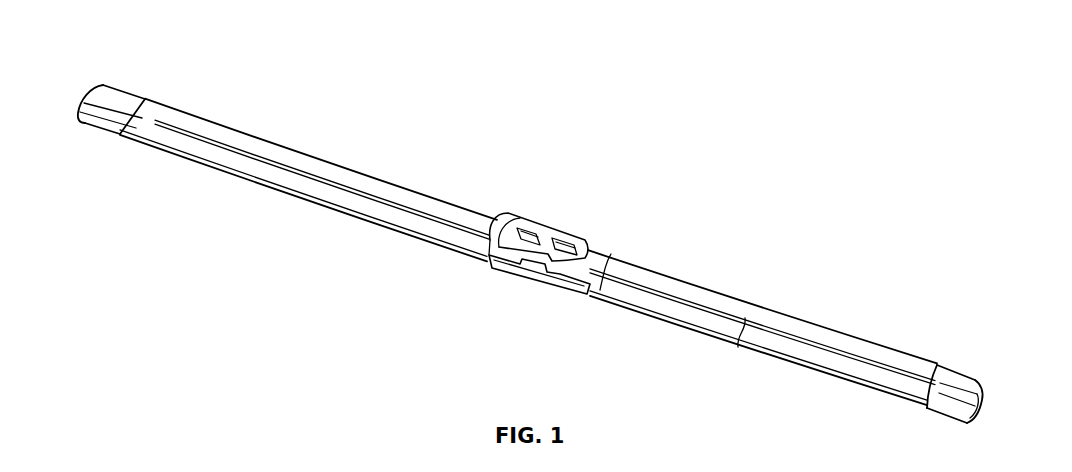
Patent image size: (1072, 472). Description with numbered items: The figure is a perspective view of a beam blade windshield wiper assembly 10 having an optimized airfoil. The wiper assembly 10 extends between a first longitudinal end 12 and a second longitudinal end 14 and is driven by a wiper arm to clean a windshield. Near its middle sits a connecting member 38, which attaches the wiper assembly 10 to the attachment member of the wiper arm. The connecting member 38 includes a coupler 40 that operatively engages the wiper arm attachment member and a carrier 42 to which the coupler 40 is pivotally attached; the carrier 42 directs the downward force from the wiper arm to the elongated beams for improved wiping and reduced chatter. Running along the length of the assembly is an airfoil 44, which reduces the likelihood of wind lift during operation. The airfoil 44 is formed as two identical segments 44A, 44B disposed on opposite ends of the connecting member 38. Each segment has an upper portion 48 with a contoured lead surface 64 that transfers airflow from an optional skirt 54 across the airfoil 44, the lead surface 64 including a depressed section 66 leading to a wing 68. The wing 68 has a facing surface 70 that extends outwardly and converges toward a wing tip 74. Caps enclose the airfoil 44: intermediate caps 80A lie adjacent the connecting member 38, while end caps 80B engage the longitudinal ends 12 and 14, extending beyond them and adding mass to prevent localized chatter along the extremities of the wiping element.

The beam blade windshield wiper assembly 10 is at (409, 106).
The first longitudinal end 12 is at (117, 68).
The second longitudinal end 14 is at (969, 360).
The connecting member 38 is at (517, 195).
The coupler 40 is at (551, 222).
The carrier 42 is at (529, 268).
The airfoil 44 is at (338, 148).
The first airfoil segment 44A is at (220, 92).
The second airfoil segment 44B is at (692, 266).
The upper portion 48 is at (276, 122).
The skirt 54 is at (240, 177).
The contoured lead surface 64 is at (337, 210).
The depressed section 66 is at (738, 347).
The wing 68 is at (831, 328).
The facing surface 70 is at (883, 362).
The wing tip 74 is at (745, 318).
The intermediate caps 80A is at (573, 310).
The end caps 80B is at (93, 140).